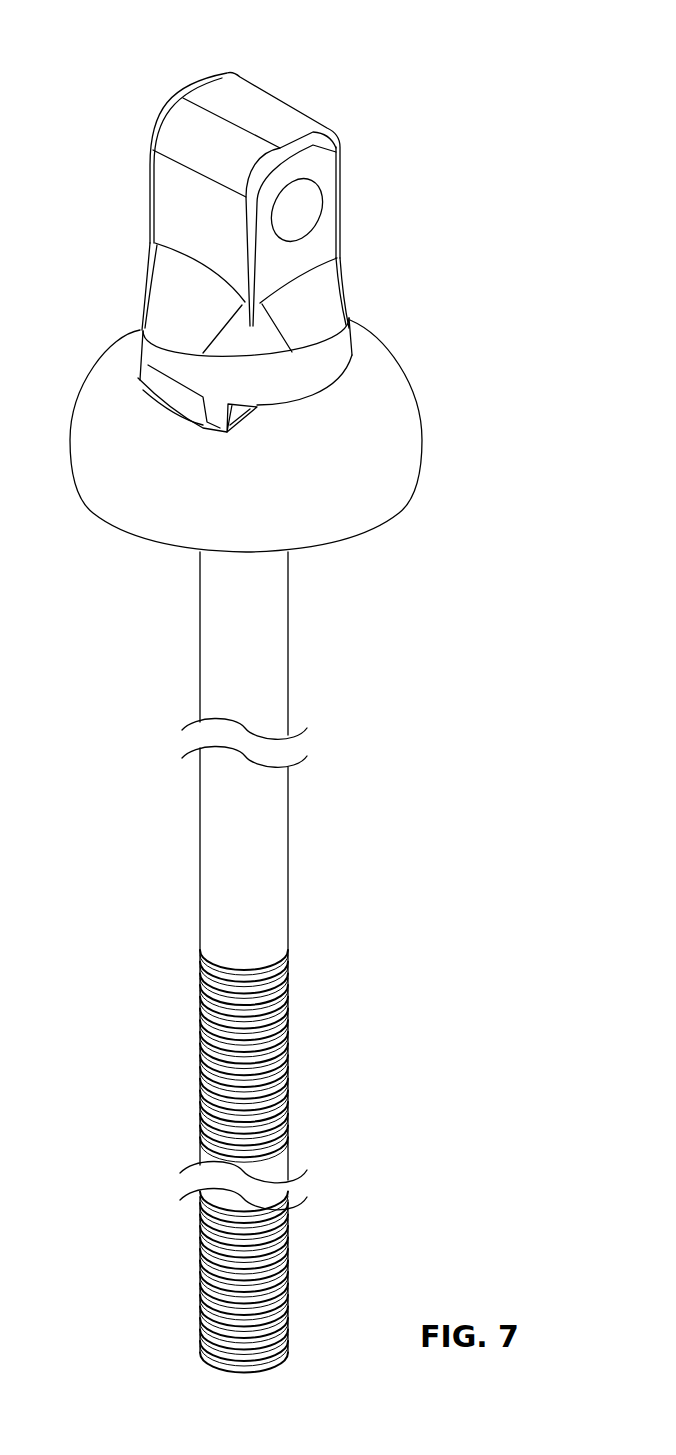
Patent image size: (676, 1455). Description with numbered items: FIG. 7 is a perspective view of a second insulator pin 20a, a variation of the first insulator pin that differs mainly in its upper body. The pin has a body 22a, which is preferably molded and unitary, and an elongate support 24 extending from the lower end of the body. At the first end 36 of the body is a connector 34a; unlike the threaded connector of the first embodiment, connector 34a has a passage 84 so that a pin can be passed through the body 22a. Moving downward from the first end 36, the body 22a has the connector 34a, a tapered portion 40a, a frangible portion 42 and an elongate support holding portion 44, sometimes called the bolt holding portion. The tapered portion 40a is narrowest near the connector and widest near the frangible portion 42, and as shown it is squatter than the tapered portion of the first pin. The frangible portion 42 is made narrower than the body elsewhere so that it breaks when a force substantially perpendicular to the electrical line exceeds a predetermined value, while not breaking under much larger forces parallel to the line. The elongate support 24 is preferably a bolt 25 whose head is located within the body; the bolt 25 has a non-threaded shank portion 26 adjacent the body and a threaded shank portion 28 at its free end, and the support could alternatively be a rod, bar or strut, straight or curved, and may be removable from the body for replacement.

The insulator pin 20a is at (450, 81).
The body 22a is at (438, 251).
The connector 34a is at (136, 144).
The first end 36 is at (210, 90).
The passage 84 is at (321, 207).
The tapered portion 40a is at (345, 330).
The frangible portion 42 is at (232, 427).
The elongate support holding portion 44 is at (415, 450).
The elongate support 24 is at (376, 867).
The bolt 25 is at (285, 668).
The non-threaded shank portion 26 is at (203, 693).
The threaded shank portion 28 is at (288, 1043).